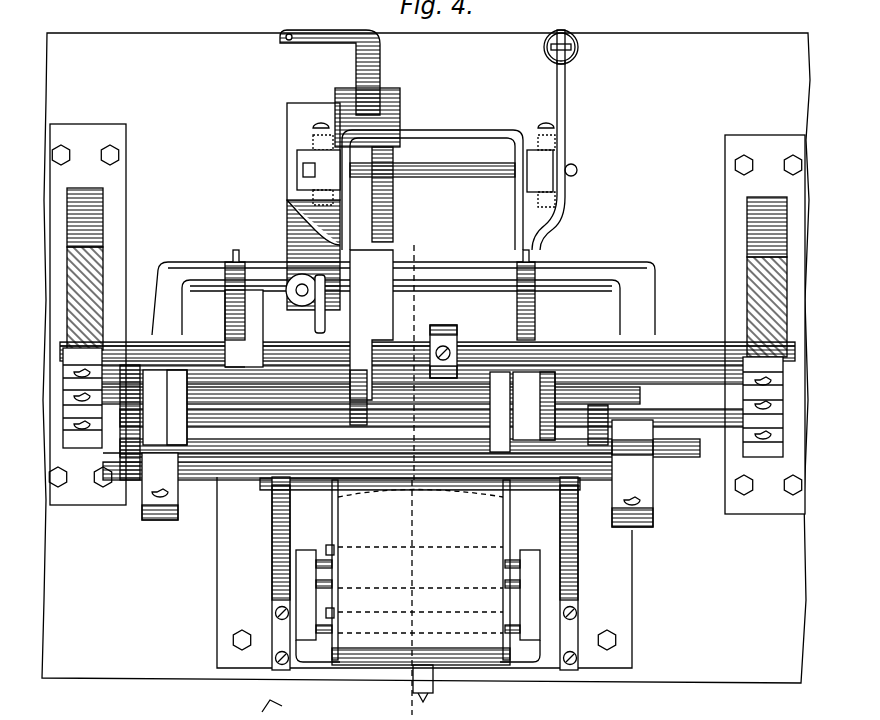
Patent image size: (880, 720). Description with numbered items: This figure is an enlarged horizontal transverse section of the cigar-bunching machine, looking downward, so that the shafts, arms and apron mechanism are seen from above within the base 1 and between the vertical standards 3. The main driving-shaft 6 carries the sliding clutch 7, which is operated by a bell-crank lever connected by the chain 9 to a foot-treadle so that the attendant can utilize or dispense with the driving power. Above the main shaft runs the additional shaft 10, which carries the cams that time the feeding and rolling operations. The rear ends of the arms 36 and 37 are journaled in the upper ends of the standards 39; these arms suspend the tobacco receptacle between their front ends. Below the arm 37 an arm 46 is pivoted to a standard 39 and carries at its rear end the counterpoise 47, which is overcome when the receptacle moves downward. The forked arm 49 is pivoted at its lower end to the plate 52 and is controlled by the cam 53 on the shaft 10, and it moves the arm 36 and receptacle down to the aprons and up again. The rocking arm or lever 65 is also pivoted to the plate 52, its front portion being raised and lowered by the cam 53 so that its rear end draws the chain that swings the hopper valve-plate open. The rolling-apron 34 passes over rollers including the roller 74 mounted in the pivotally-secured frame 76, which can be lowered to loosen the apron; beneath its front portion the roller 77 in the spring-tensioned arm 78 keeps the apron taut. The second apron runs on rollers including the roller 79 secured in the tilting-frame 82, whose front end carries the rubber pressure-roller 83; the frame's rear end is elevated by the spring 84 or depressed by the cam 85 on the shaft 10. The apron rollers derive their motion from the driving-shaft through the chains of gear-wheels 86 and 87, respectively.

The base 1 is at (426, 358).
The vertical standards 3 is at (427, 319).
The main driving-shaft 6 is at (528, 407).
The sliding clutch 7 is at (244, 328).
The chain 9 is at (432, 321).
The additional shaft 10 is at (425, 350).
The rolling-apron 34 is at (421, 597).
The arm 36 is at (432, 190).
The arm 37 is at (516, 244).
The standards 39 is at (436, 163).
The arm 46 is at (548, 155).
The counterpoise 47 is at (572, 47).
The arm 49 is at (332, 305).
The plate 52 is at (313, 206).
The cam 53 is at (376, 363).
The rocking arm or lever 65 is at (350, 227).
The roller 74 is at (424, 573).
The pivotally-secured frame 76 is at (403, 298).
The roller 77 is at (323, 546).
The pivotally-secured arm 78 is at (424, 606).
The roller 79 is at (323, 610).
The tilting-frame 82 is at (541, 316).
The rubber pressure-roller 83 is at (430, 422).
The spring 84 is at (273, 704).
The cam 85 is at (437, 344).
The chain of gear-wheels 86 is at (125, 434).
The chain of gear-wheels 87 is at (620, 466).